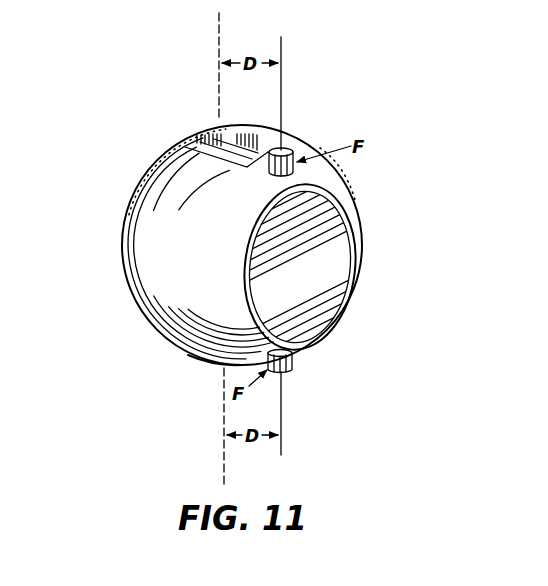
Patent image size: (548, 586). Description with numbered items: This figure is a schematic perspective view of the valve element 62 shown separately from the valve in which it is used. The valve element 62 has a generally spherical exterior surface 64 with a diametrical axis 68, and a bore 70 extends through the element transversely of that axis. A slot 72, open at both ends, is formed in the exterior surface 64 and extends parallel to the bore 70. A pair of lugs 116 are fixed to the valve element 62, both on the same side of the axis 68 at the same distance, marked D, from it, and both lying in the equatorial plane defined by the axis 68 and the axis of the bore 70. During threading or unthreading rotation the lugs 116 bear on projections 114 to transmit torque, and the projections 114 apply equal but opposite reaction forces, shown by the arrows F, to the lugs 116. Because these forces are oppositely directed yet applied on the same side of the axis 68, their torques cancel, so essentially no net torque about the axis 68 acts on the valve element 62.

The valve element 62 is at (185, 358).
The spherical exterior surface 64 is at (152, 281).
The diametrical axis 68 is at (219, 40).
The bore 70 is at (322, 239).
The slot 72 is at (186, 147).
The projections 114 is at (535, 187).
The lugs 116 is at (290, 151).